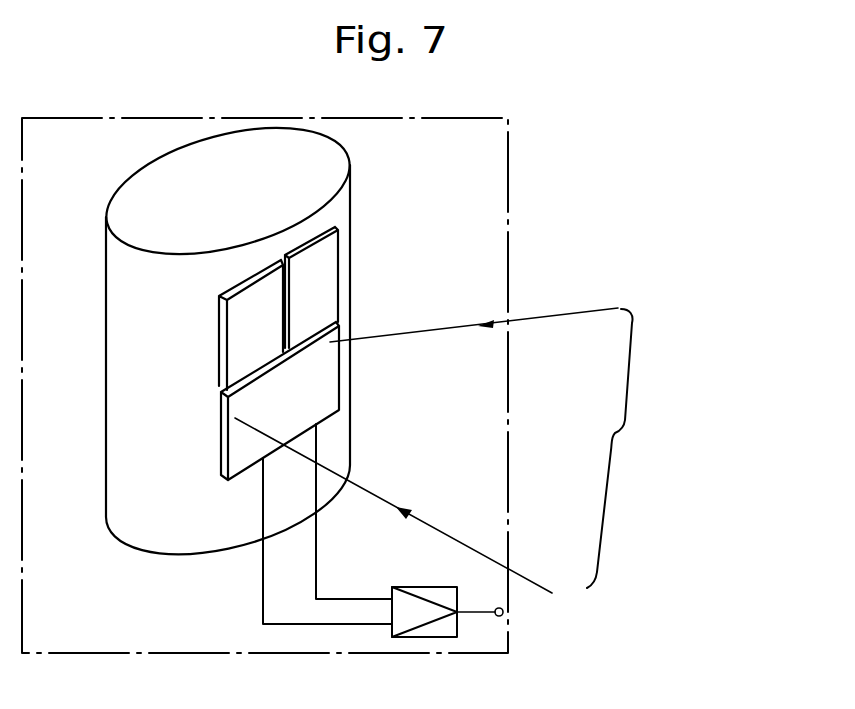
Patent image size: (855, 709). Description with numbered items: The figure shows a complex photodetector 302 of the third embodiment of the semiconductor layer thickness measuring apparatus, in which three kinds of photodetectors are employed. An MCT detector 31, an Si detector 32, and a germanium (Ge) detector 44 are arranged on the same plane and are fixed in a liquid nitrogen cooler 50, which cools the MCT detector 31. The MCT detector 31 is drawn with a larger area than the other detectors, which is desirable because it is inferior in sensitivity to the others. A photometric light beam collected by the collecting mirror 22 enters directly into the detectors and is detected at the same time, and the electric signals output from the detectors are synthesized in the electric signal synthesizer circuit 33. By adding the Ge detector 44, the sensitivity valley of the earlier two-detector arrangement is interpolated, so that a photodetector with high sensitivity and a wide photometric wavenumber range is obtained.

The complex photodetector 302 is at (509, 147).
The liquid nitrogen cooler 50 is at (338, 155).
The Si detector 32 is at (242, 340).
The germanium (Ge) detector 44 is at (332, 282).
The MCT detector 31 is at (246, 447).
The electric signal synthesizer circuit 33 is at (430, 590).
The collecting mirror 22 is at (524, 450).